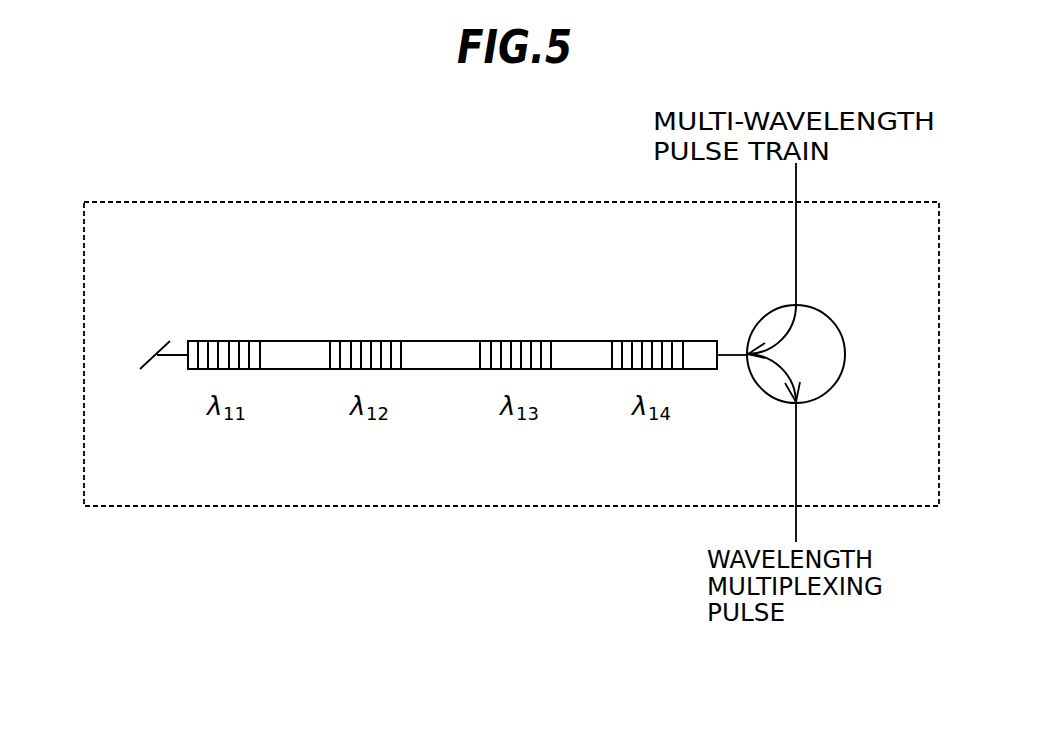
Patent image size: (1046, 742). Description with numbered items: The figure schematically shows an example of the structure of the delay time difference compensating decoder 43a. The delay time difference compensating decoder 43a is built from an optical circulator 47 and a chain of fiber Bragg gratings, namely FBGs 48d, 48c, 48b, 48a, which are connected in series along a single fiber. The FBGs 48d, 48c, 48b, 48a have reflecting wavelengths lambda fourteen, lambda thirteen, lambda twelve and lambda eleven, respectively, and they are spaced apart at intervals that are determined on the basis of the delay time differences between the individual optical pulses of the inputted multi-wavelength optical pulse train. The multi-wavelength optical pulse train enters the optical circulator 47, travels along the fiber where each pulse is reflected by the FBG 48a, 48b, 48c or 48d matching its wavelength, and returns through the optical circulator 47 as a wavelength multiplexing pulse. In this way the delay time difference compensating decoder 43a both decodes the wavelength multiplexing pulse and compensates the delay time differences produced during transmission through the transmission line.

The delay time difference compensating decoder 43a is at (235, 507).
The optical circulator 47 is at (837, 323).
The FBG 48a is at (245, 341).
The FBG 48b is at (388, 341).
The FBG 48c is at (537, 341).
The FBG 48d is at (671, 341).